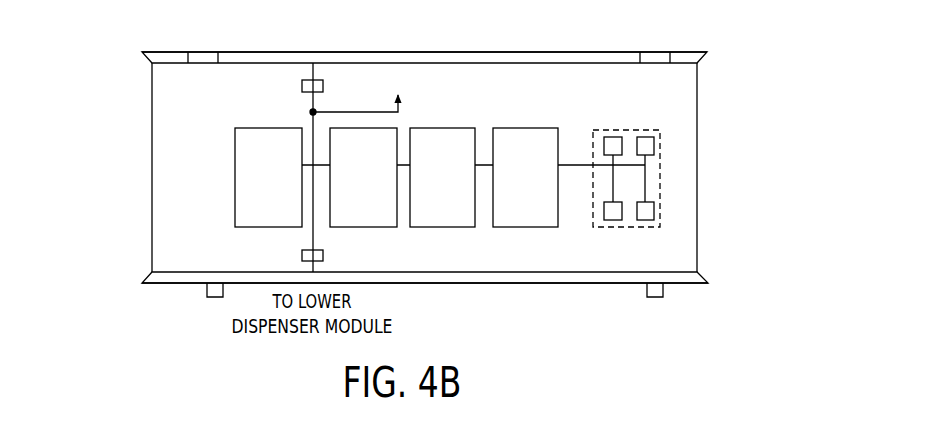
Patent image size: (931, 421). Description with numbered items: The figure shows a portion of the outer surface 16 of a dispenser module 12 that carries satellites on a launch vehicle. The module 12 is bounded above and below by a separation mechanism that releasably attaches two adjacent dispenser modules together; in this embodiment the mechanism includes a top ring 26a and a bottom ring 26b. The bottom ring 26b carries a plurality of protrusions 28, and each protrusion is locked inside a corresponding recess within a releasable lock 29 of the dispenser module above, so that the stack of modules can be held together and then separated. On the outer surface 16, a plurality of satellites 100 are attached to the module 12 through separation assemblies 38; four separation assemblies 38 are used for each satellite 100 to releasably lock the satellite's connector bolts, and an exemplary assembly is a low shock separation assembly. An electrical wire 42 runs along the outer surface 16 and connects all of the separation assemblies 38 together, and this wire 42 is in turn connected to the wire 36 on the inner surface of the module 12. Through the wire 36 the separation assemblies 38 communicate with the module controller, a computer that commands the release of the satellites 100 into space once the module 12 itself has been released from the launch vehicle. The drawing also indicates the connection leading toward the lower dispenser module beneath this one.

The dispenser module 12 is at (108, 195).
The outer surface 16 is at (178, 88).
The top ring 26a is at (699, 58).
The bottom ring 26b is at (700, 278).
The protrusions 28 is at (204, 291).
The releasable lock 29 is at (207, 60).
The wire 36 is at (362, 90).
The separation assembly 38 is at (613, 136).
The electrical wire 42 is at (585, 164).
The satellites 100 is at (265, 127).